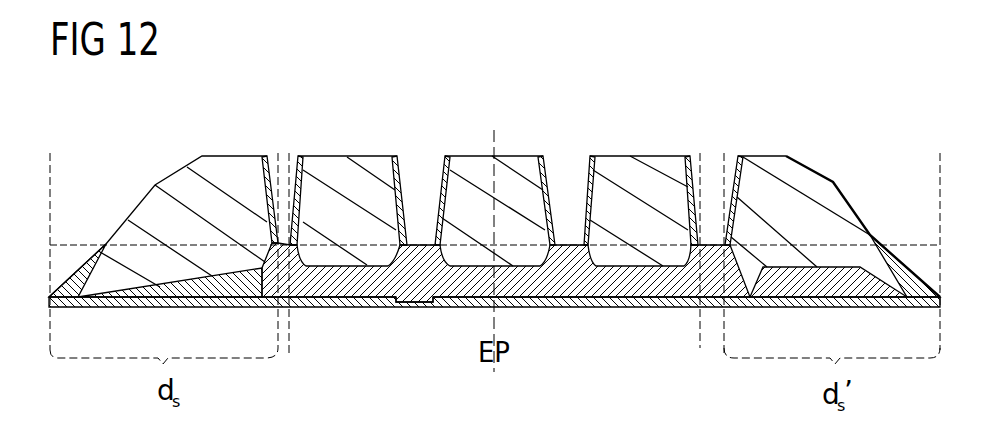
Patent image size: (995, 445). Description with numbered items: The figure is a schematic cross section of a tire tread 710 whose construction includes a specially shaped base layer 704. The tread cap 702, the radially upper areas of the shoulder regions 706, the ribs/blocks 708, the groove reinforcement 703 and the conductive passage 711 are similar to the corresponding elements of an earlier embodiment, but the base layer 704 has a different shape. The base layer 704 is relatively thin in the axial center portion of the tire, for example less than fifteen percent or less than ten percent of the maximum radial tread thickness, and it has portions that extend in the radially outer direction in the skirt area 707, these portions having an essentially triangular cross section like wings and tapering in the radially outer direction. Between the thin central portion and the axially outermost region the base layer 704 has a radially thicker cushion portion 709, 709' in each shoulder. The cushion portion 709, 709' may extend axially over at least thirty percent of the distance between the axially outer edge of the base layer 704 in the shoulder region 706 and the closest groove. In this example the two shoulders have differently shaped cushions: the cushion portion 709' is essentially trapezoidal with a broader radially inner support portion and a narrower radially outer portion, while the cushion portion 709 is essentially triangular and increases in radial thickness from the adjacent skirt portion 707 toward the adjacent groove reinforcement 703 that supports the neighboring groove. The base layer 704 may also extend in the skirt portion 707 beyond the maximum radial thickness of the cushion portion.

The tread cap 702 is at (230, 170).
The groove reinforcement 703 is at (363, 292).
The base layer 704 is at (681, 300).
The shoulder region 706 is at (149, 184).
The skirt area 707 is at (87, 252).
The ribs/blocks 708 is at (316, 163).
The cushion portion 709 is at (222, 353).
The cushion portion 709' is at (832, 353).
The tread 710 is at (752, 138).
The conductive passage 711 is at (420, 300).